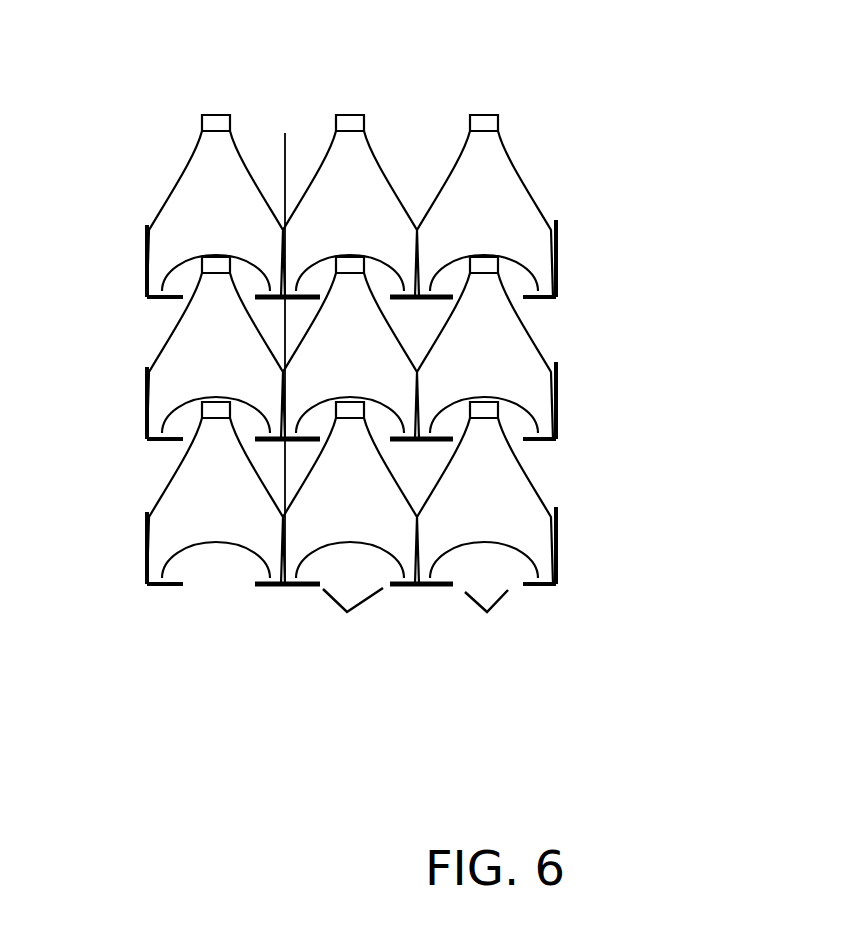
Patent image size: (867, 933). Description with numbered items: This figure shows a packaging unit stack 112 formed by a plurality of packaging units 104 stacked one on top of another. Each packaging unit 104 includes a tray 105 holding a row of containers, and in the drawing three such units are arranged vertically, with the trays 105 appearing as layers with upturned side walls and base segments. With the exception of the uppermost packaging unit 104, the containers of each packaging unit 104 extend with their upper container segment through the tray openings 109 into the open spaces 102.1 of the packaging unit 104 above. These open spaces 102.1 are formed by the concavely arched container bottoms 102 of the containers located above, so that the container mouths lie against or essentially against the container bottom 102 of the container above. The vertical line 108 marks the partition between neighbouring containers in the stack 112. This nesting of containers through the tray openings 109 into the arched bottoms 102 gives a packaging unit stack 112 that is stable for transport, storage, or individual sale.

The packaging unit stack 112 is at (623, 120).
The container bottom 102 is at (258, 257).
The open space 102.1 is at (150, 226).
The packaging unit 104 is at (583, 217).
The tray 105 is at (565, 275).
The partition / contact line 108 is at (415, 185).
The tray opening 109 is at (518, 307).